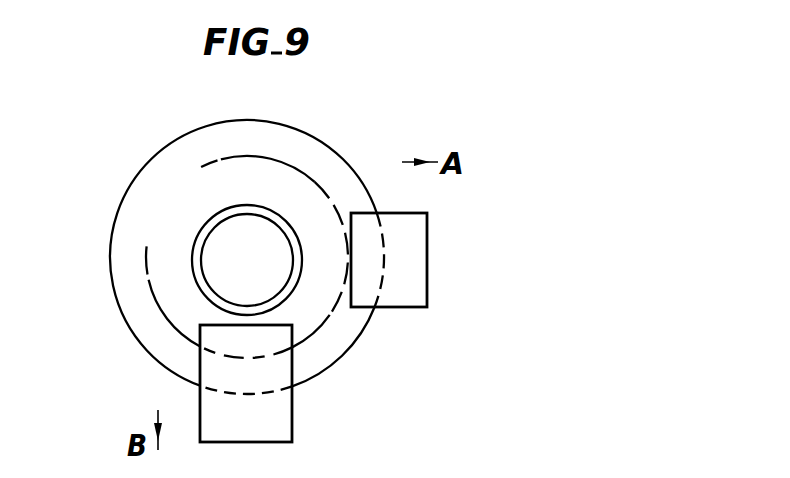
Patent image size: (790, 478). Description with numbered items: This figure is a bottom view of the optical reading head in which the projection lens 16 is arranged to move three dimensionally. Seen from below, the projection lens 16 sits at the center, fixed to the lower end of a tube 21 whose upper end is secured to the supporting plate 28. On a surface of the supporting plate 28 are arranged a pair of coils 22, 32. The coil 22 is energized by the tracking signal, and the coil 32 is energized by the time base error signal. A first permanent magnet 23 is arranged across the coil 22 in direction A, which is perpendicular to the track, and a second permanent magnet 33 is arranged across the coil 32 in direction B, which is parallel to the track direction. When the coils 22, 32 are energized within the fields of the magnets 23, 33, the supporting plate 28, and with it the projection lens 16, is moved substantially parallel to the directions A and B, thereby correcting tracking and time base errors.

The projection lens 16 is at (238, 227).
The tube 21 is at (297, 228).
The coil 22 is at (215, 257).
The first permanent magnet 23 is at (416, 288).
The supporting plate 28 is at (129, 327).
The coil 32 is at (158, 253).
The second permanent magnet 33 is at (275, 418).